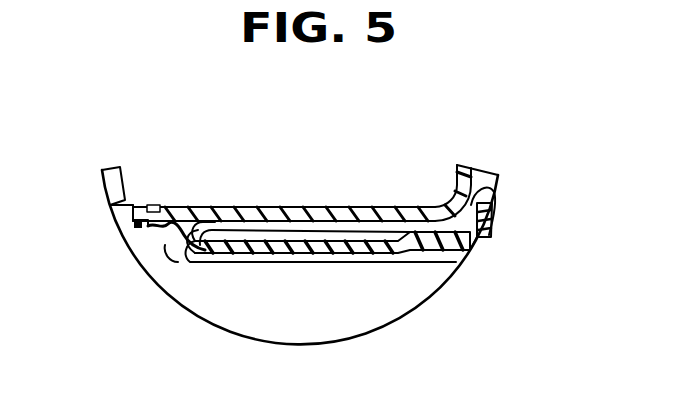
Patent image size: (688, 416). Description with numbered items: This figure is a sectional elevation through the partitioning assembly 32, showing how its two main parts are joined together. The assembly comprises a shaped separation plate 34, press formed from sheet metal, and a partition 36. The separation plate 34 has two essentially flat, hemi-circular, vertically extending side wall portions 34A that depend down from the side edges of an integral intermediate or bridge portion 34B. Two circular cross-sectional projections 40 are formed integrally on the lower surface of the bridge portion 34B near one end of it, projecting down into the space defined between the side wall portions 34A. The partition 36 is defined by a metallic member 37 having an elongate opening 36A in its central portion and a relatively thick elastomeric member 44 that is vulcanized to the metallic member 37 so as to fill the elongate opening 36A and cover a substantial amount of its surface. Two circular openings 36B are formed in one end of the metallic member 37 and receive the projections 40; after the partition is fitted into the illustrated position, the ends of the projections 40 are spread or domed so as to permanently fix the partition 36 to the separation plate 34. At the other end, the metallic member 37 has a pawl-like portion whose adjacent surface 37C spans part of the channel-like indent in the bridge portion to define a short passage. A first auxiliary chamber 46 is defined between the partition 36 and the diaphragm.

The partitioning assembly 32 is at (447, 153).
The separation plate 34 is at (410, 208).
The side wall portions 34A is at (368, 306).
The intermediate portion 34B is at (303, 207).
The partition 36 is at (392, 268).
The elongate opening 36A is at (207, 236).
The circular openings 36B is at (157, 232).
The metallic member 37 is at (493, 233).
The adjacent surface 37C is at (497, 187).
The projections 40 is at (150, 232).
The elastomeric member 44 is at (470, 203).
The first auxiliary chamber 46 is at (334, 233).